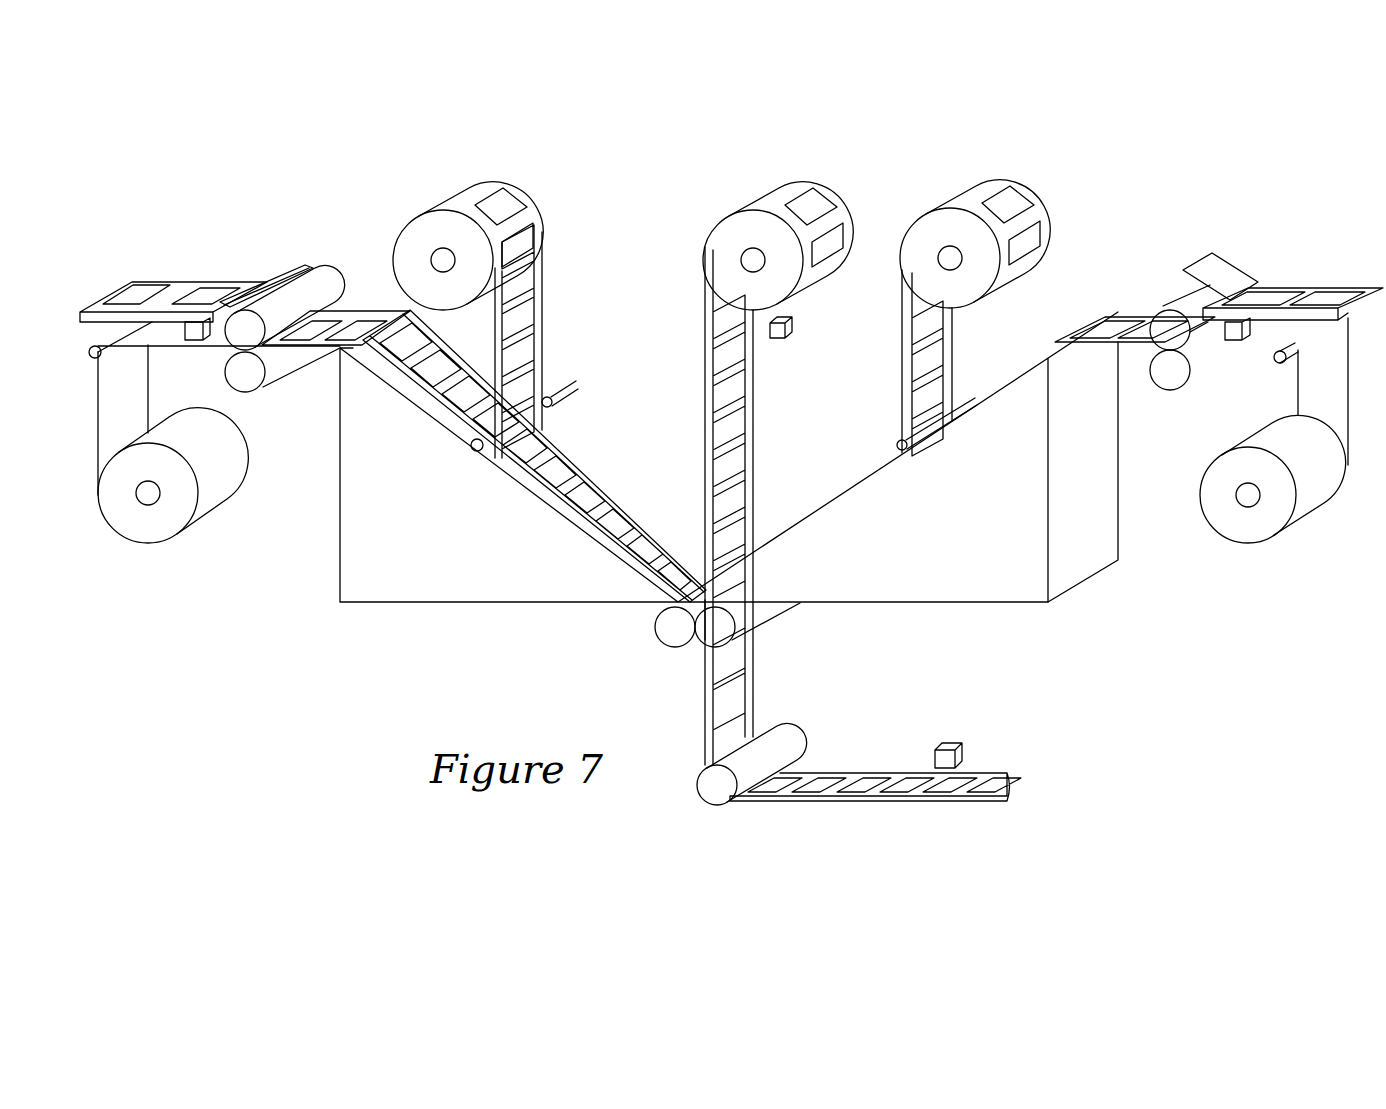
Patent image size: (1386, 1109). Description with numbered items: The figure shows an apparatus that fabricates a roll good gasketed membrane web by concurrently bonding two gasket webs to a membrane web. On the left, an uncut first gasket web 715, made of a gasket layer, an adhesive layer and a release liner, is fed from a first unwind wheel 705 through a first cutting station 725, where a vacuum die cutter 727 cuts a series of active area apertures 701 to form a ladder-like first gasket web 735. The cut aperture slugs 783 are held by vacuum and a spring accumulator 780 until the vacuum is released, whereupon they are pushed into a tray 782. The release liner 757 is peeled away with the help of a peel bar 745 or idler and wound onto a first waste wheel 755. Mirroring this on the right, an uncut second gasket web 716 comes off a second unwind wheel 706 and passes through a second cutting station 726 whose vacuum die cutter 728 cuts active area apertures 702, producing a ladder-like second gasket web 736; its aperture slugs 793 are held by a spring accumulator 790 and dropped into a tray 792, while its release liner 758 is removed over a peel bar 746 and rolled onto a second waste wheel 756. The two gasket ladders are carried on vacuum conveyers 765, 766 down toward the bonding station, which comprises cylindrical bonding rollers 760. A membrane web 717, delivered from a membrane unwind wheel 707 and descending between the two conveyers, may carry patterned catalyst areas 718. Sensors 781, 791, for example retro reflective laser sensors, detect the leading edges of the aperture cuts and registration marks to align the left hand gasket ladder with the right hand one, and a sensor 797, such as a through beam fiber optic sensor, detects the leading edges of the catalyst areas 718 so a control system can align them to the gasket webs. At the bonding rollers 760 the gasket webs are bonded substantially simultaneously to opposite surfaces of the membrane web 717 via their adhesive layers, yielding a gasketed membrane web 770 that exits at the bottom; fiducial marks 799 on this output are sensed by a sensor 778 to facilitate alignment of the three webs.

The active area apertures 701 is at (358, 330).
The active area apertures 702 is at (1138, 330).
The first unwind wheel 705 is at (160, 530).
The second unwind wheel 706 is at (1220, 520).
The membrane unwind wheel 707 is at (725, 242).
The first gasket web 715 is at (135, 407).
The second gasket web 716 is at (1310, 387).
The membrane web 717 is at (752, 390).
The patterned catalyst areas 718 is at (735, 445).
The first cutting station 725 is at (292, 360).
The second cutting station 726 is at (1146, 360).
The vacuum die cutter 727 is at (320, 275).
The vacuum die cutter 728 is at (1165, 315).
The first gasket web 735 is at (433, 395).
The second gasket web 736 is at (1102, 318).
The peel bar 745 is at (553, 401).
The peel bar 746 is at (900, 441).
The first waste wheel 755 is at (408, 260).
The second waste wheel 756 is at (935, 228).
The release liner 757 is at (543, 297).
The release liner 758 is at (952, 342).
The bonding rollers 760 is at (695, 652).
The vacuum conveyer 765 is at (487, 592).
The vacuum conveyer 766 is at (933, 590).
The gasketed membrane web 770 is at (858, 772).
The sensor 778 is at (958, 744).
The spring accumulator 780 is at (273, 283).
The sensor 781 is at (192, 341).
The tray 782 is at (145, 284).
The aperture slugs 783 is at (203, 293).
The spring accumulator 790 is at (1225, 270).
The sensor 791 is at (1232, 340).
The tray 792 is at (1330, 286).
The aperture slugs 793 is at (1273, 292).
The sensor 797 is at (790, 323).
The fiducial marks 799 is at (875, 797).